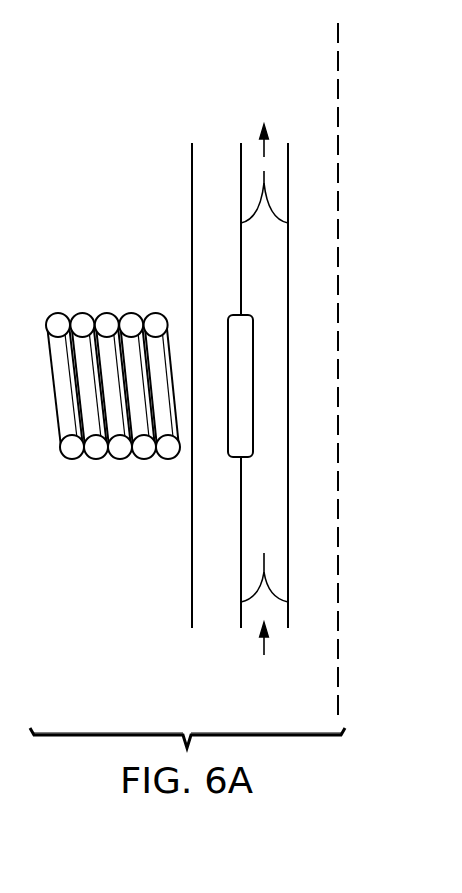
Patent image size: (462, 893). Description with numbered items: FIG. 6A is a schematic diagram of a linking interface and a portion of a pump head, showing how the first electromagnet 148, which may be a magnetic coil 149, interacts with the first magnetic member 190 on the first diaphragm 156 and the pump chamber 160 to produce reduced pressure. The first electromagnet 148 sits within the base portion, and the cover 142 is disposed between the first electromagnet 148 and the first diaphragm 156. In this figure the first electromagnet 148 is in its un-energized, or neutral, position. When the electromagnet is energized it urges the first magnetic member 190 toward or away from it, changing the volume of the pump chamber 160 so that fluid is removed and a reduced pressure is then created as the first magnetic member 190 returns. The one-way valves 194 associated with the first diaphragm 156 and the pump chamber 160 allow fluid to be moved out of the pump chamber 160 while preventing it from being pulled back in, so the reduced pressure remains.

The cover 142 is at (192, 265).
The first electromagnet 148 is at (48, 357).
The magnetic coil 149 is at (58, 421).
The first diaphragm 156 is at (228, 437).
The pump chamber 160 is at (265, 238).
The first magnetic member 190 is at (228, 340).
The one-way valves 194 is at (260, 215).